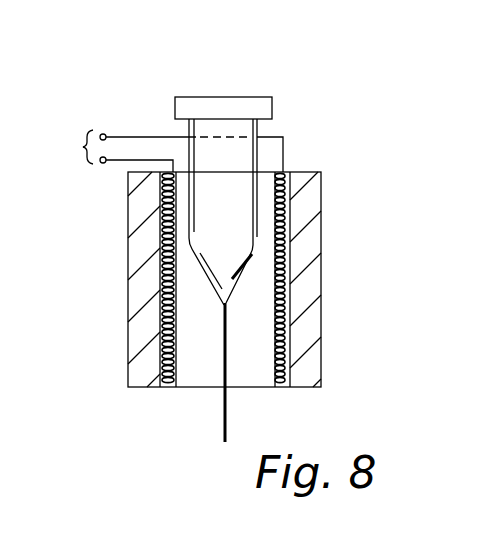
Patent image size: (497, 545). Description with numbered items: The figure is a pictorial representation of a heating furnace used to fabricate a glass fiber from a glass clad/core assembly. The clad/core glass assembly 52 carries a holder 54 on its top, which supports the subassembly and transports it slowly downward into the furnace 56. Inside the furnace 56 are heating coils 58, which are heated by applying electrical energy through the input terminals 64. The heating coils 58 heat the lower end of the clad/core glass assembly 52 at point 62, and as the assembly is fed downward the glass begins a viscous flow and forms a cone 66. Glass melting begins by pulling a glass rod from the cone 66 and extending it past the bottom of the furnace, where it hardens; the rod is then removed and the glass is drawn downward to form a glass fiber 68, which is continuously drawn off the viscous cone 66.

The clad/core glass assembly 52 is at (296, 154).
The holder 54 is at (273, 102).
The furnace 56 is at (137, 254).
The heating coils 58 is at (178, 300).
The point 62 is at (248, 245).
The input terminals 64 is at (119, 151).
The cone 66 is at (227, 300).
The glass fiber 68 is at (227, 422).